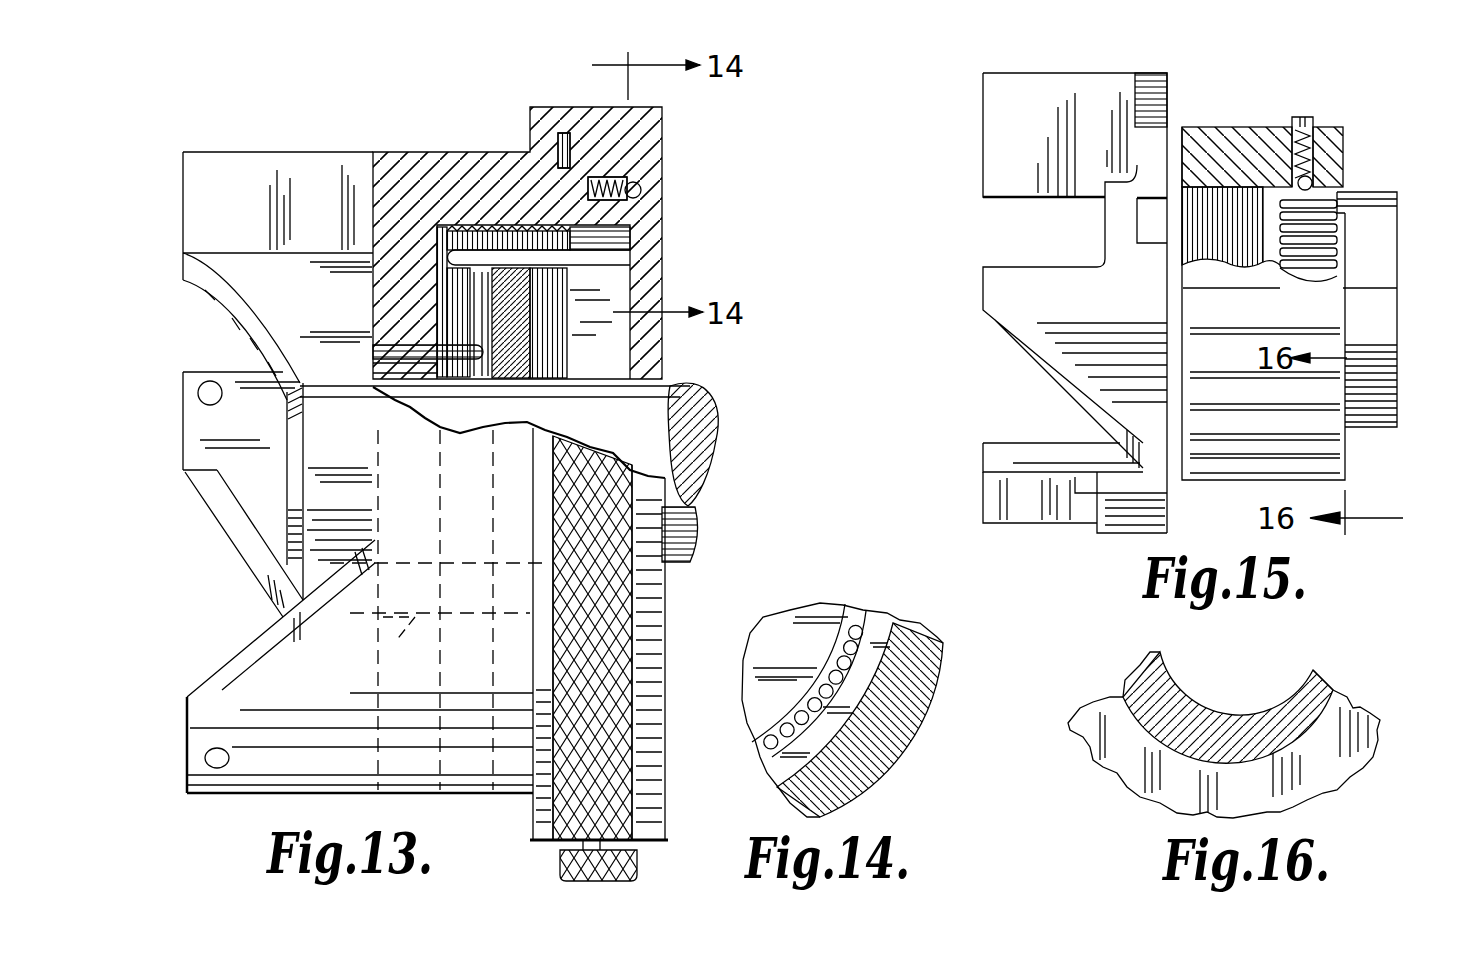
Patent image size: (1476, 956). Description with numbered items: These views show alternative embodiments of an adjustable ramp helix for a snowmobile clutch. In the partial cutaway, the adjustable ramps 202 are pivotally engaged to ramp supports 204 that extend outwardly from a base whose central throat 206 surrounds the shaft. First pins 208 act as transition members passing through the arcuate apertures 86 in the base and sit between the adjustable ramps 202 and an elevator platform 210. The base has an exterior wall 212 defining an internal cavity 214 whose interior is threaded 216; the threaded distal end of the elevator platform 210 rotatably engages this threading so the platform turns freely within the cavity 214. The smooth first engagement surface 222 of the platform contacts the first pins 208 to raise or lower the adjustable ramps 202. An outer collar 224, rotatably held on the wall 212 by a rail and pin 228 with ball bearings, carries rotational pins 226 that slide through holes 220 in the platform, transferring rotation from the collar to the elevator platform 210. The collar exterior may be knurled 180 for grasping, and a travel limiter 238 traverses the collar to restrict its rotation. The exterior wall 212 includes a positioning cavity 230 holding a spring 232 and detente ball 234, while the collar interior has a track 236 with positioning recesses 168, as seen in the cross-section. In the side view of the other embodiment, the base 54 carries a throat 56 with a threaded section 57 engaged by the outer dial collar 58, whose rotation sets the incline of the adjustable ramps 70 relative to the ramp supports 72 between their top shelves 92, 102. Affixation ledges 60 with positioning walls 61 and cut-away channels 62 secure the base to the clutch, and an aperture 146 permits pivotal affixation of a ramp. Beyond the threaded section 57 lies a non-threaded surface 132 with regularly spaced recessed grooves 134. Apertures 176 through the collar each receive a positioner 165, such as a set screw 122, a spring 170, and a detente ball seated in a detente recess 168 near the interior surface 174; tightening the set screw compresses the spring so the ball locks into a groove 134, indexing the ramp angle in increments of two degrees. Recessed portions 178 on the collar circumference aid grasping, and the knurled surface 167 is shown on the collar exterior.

In FIG. 13, the adjustable ramps 202 is at (163, 248).
In FIG. 13, the ramp supports 204 is at (255, 180).
In FIG. 13, the central throat 206 is at (328, 463).
In FIG. 13, the first pins 208 is at (378, 345).
In FIG. 13, the elevator platform 210 is at (517, 293).
In FIG. 13, the exterior wall 212 is at (483, 170).
In FIG. 13, the internal cavity 214 is at (455, 318).
In FIG. 13, the threaded interior of cavity 216 is at (383, 145).
In FIG. 13, the holes 220 is at (458, 226).
In FIG. 13, the first engagement surface 222 is at (456, 172).
In FIG. 13, the outer collar 224 is at (648, 641).
In FIG. 13, the rotational pins 226 is at (592, 243).
In FIG. 13, the rail and pin 228 is at (563, 133).
In FIG. 13, the positioning cavity 230 is at (617, 207).
In FIG. 13, the spring 232 is at (613, 175).
In FIG. 13, the detente ball 234 is at (638, 186).
In FIG. 14, the track 236 is at (866, 655).
In FIG. 13, the travel limiter 238 is at (562, 867).
In FIG. 13, the knurled sections 180 is at (610, 600).
In FIG. 13, the aperture 146 is at (210, 392).
In FIG. 13, the arcuate or kidney shaped apertures 86 is at (347, 647).
In FIG. 15, the base 54 is at (1150, 115).
In FIG. 15, the throat 56 is at (1372, 293).
In FIG. 16, the throat 56 is at (1315, 682).
In FIG. 15, the threaded section 57 is at (1173, 188).
In FIG. 16, the outer dial collar 58 is at (1355, 712).
In FIG. 15, the affixation ledges 60 is at (1112, 250).
In FIG. 15, the positioning wall 61 is at (1090, 482).
In FIG. 15, the cut-away channel 62 is at (1147, 220).
In FIG. 15, the adjustable ramps 70 is at (1025, 132).
In FIG. 15, the ramp supports 72 is at (1027, 547).
In FIG. 15, the top shelf 92 is at (985, 506).
In FIG. 15, the top shelf 102 is at (985, 465).
In FIG. 15, the set screw 122 is at (1313, 122).
In FIG. 15, the non-threaded surface 132 is at (1345, 197).
In FIG. 15, the recessed grooves 134 is at (1325, 262).
In FIG. 15, the positioner 165 is at (1287, 165).
In FIG. 15, the knurl 167 is at (1395, 205).
In FIG. 14, the detente recess 168 is at (856, 622).
In FIG. 15, the detente recess 168 is at (1305, 205).
In FIG. 15, the spring 170 is at (1310, 186).
In FIG. 15, the interior surface 174 is at (1197, 213).
In FIG. 15, the apertures 176 is at (1294, 150).
In FIG. 16, the recessed portions 178 is at (1358, 772).